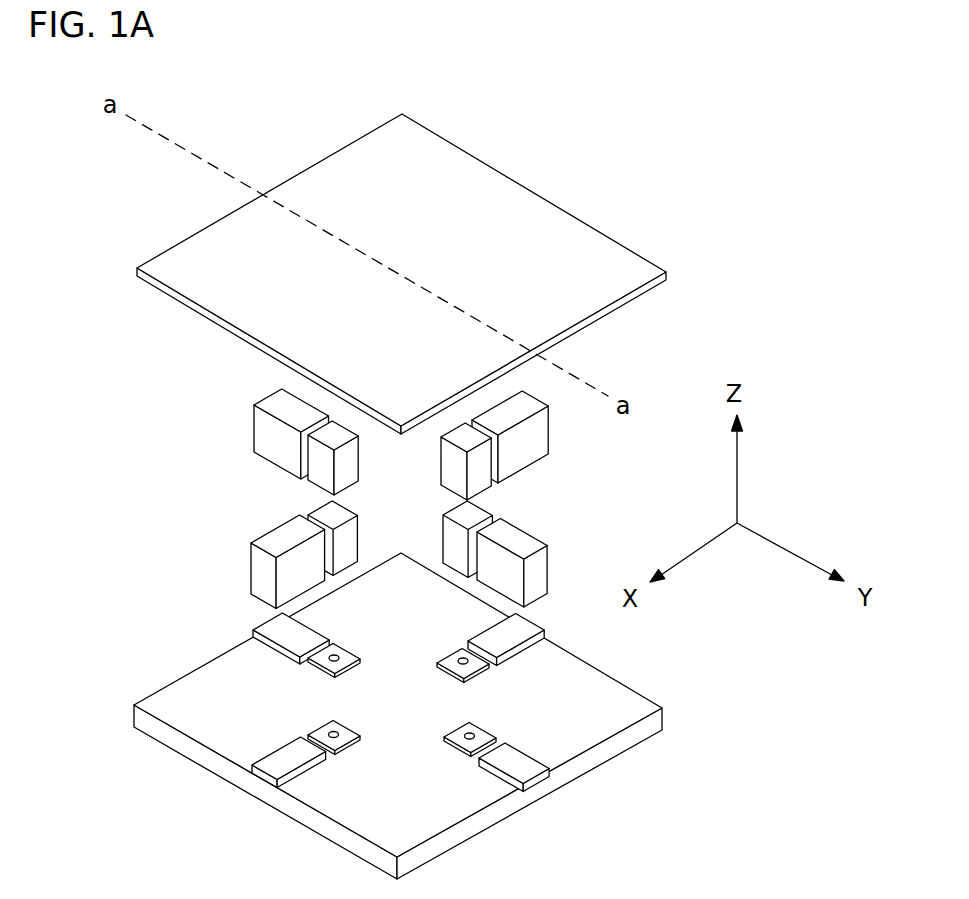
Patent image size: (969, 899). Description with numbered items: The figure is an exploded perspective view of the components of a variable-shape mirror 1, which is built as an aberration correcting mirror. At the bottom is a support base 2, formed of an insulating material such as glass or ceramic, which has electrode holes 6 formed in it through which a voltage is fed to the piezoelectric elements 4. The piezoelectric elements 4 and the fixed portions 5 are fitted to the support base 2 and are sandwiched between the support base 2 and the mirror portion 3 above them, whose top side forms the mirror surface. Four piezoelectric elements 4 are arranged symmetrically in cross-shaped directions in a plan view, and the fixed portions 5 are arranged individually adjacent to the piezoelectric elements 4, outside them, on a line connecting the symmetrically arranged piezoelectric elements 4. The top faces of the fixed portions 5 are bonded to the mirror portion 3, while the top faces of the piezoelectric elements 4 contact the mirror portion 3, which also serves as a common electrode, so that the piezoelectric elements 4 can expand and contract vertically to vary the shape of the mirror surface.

The variable-shape mirror 1 is at (732, 324).
The support base 2 is at (600, 735).
The mirror portion 3 is at (522, 210).
The piezoelectric elements 4 is at (353, 454).
The fixed portions 5 is at (258, 440).
The electrode holes 6 is at (317, 665).